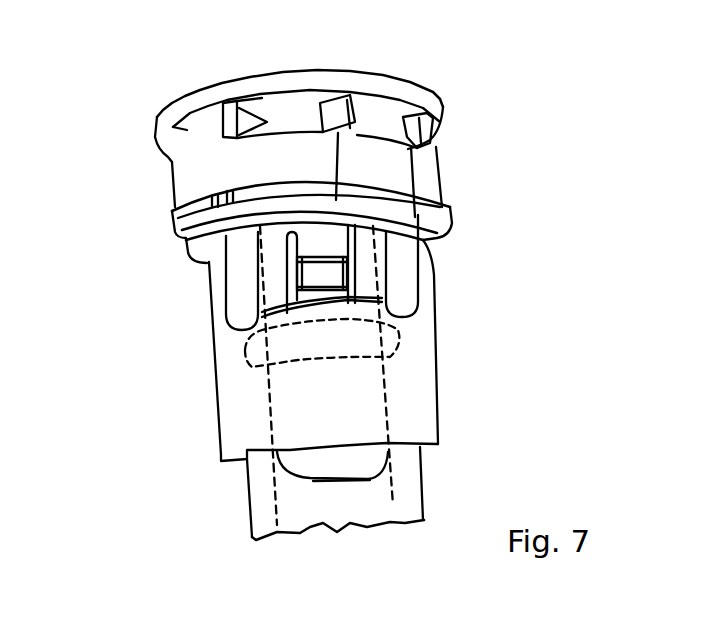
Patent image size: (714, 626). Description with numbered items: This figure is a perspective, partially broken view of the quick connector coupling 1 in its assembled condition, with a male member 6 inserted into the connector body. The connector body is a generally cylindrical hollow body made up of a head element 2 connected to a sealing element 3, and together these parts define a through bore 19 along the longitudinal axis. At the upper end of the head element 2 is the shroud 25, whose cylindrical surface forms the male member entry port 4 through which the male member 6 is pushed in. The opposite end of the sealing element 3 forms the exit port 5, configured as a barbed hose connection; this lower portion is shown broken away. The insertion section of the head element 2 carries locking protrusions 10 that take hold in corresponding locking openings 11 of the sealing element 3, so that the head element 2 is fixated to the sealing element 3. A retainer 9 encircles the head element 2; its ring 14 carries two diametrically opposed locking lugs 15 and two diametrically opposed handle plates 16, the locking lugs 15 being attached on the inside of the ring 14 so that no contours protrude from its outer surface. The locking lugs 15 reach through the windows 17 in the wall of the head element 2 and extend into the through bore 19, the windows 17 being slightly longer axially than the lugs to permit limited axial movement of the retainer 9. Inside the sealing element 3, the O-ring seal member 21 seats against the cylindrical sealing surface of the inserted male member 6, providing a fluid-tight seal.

The quick connector coupling 1 is at (142, 430).
The head element 2 is at (463, 84).
The sealing element 3 is at (206, 422).
The male member entry port 4 is at (378, 70).
The exit port 5 is at (323, 520).
The male member 6 is at (393, 403).
The retainer 9 is at (460, 176).
The locking protrusions 10 is at (333, 275).
The locking openings 11 is at (332, 244).
The ring 14 is at (177, 183).
The locking lugs 15 is at (386, 122).
The handle plates 16 is at (171, 128).
The windows 17 is at (418, 130).
The through bore 19 is at (393, 506).
The seal member 21 is at (402, 333).
The shroud 25 is at (222, 88).